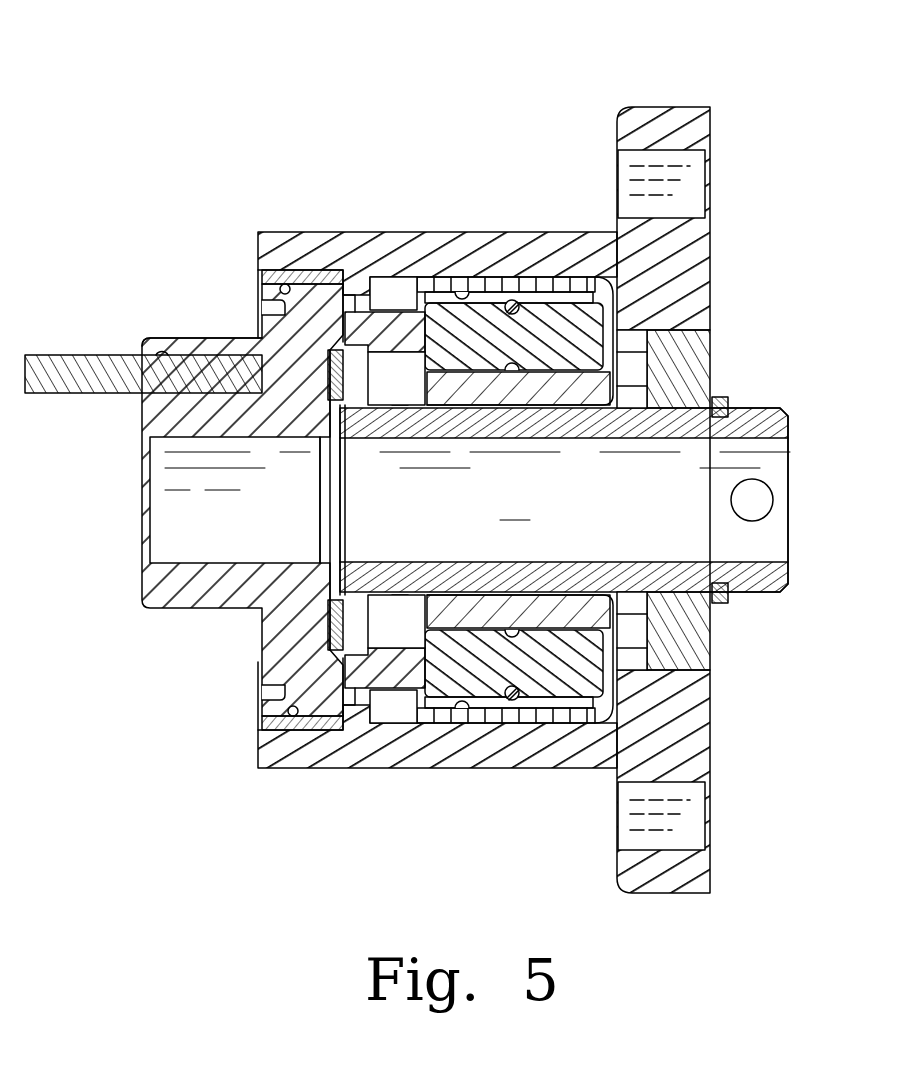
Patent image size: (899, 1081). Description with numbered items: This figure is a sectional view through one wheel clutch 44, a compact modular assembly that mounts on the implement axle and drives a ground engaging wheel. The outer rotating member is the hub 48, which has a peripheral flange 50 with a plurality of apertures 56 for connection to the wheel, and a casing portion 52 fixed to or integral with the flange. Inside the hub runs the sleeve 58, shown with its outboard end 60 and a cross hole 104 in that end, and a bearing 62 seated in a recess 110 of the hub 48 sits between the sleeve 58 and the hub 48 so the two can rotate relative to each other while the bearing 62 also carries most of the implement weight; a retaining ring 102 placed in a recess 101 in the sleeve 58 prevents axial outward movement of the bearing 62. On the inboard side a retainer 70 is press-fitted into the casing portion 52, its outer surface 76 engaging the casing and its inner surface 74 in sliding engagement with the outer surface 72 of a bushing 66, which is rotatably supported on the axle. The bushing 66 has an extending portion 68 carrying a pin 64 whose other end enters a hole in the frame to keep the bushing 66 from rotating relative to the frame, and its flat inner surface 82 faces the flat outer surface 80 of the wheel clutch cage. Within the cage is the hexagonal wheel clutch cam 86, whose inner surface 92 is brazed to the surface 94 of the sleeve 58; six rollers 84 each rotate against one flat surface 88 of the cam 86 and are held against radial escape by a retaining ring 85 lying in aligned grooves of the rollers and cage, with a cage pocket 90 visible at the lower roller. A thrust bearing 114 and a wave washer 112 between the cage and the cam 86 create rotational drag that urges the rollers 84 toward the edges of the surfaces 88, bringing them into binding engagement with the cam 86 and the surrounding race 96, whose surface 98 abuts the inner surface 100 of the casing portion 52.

The wheel clutch 44 is at (122, 100).
The hub 48 is at (725, 462).
The peripheral flange 50 is at (668, 108).
The casing portion 52 is at (268, 758).
The apertures 56 is at (693, 180).
The sleeve 58 is at (652, 580).
The shaft end 60 is at (783, 412).
The bearing 62 is at (705, 362).
The pin 64 is at (53, 360).
The bushing 66 is at (270, 663).
The extending portion 68 is at (160, 343).
The retainer 70 is at (320, 270).
The outer surface of bushing 72 is at (340, 770).
The inner surface of retainer 74 is at (286, 282).
The outer surface of retainer 76 is at (300, 772).
The flat outer surface of wheel clutch cage 80 is at (330, 574).
The flat inner surface of bushing 82 is at (330, 440).
The roller 84 is at (447, 308).
The retaining ring 85 is at (515, 300).
The wheel clutch cam 86 is at (443, 390).
The flat surface of cam 88 is at (552, 612).
The cage pocket 90 is at (458, 726).
The inner surface of cam 92 is at (510, 598).
The surface of sleeve 94 is at (405, 600).
The race 96 is at (565, 290).
The surface of race 98 is at (502, 276).
The inner surface of casing portion 100 is at (515, 725).
The recess in sleeve 101 is at (728, 602).
The retaining ring 102 is at (727, 402).
The cross hole 104 is at (760, 502).
The recess in hub 110 is at (737, 326).
The wave washer 112 is at (283, 300).
The thrust bearing 114 is at (262, 332).